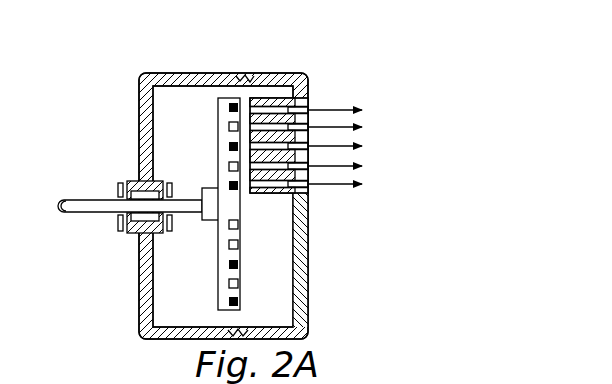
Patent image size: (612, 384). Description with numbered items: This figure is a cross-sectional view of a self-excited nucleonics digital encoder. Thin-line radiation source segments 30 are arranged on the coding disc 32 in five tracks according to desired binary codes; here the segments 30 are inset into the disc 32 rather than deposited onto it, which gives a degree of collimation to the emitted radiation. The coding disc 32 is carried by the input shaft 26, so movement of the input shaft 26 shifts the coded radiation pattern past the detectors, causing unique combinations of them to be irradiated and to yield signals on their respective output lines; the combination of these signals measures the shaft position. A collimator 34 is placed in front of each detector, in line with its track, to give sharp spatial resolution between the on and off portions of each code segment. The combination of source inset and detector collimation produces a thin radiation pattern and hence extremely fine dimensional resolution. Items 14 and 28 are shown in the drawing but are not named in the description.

The housing 14 is at (200, 72).
The input shaft 26 is at (90, 213).
The bearing bushing 28 is at (133, 233).
The radiation source segments 30 is at (240, 264).
The coding disc 32 is at (218, 273).
The collimator 34 is at (273, 203).